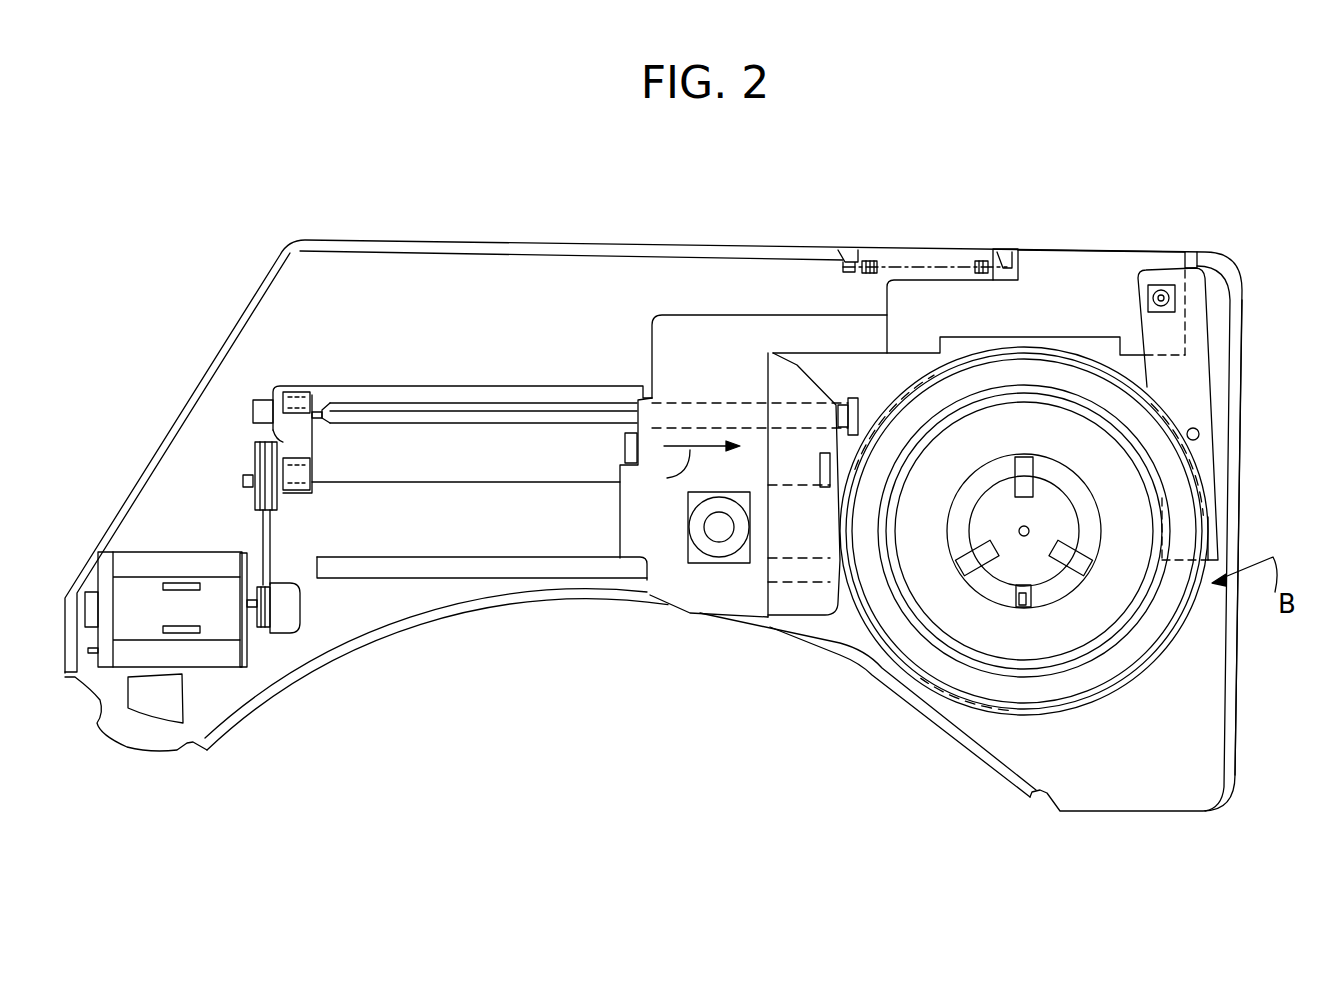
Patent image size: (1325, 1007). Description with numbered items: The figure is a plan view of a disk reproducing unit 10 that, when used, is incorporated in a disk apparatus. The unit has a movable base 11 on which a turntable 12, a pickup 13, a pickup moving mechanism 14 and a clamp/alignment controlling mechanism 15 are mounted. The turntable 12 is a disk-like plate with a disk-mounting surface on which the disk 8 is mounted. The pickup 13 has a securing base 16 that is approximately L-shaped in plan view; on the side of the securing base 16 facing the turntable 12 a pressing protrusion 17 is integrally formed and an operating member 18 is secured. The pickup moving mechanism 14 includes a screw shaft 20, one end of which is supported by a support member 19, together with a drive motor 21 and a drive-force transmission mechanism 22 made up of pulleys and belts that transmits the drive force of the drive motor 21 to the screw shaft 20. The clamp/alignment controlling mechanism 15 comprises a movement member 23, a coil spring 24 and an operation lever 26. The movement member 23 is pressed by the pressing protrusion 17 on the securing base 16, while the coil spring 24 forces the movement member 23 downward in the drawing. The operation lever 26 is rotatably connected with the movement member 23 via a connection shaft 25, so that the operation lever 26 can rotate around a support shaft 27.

The disk 8 is at (1082, 620).
The disk reproducing unit 10 is at (529, 234).
The movable base 11 is at (362, 622).
The turntable 12 is at (963, 660).
The pickup 13 is at (717, 617).
The pickup moving mechanism 14 is at (175, 533).
The clamp/alignment controlling mechanism 15 is at (1209, 303).
The securing base 16 is at (668, 608).
The pressing protrusion 17 is at (835, 323).
The operating member 18 is at (808, 603).
The support member 19 is at (849, 398).
The screw shaft 20 is at (428, 428).
The drive motor 21 is at (222, 668).
The drive-force transmission mechanism 22 is at (253, 457).
The movement member 23 is at (1098, 273).
The coil spring 24 is at (940, 262).
The connection shaft 25 is at (1172, 294).
The operation lever 26 is at (1203, 377).
The support shaft 27 is at (1200, 435).